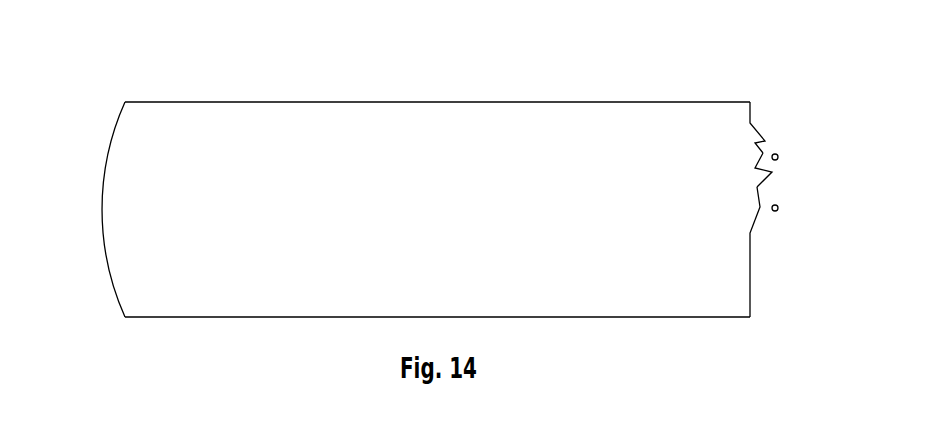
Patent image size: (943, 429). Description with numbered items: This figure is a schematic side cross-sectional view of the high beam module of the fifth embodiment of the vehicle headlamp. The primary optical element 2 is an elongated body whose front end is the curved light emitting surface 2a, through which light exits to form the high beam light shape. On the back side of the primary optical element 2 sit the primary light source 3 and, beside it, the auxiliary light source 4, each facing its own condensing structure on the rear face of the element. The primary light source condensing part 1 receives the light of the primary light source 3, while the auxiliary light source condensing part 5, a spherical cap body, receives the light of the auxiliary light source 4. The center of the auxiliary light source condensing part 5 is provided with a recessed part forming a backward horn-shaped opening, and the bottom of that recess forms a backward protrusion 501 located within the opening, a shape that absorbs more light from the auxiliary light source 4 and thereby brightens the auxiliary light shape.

The primary optical element 2 is at (290, 121).
The light emitting surface 2a is at (102, 200).
The auxiliary light source condensing part 5 is at (752, 133).
The auxiliary light source 4 is at (785, 156).
The protrusion 501 is at (770, 172).
The primary light source 3 is at (782, 212).
The primary light source condensing part 1 is at (758, 223).